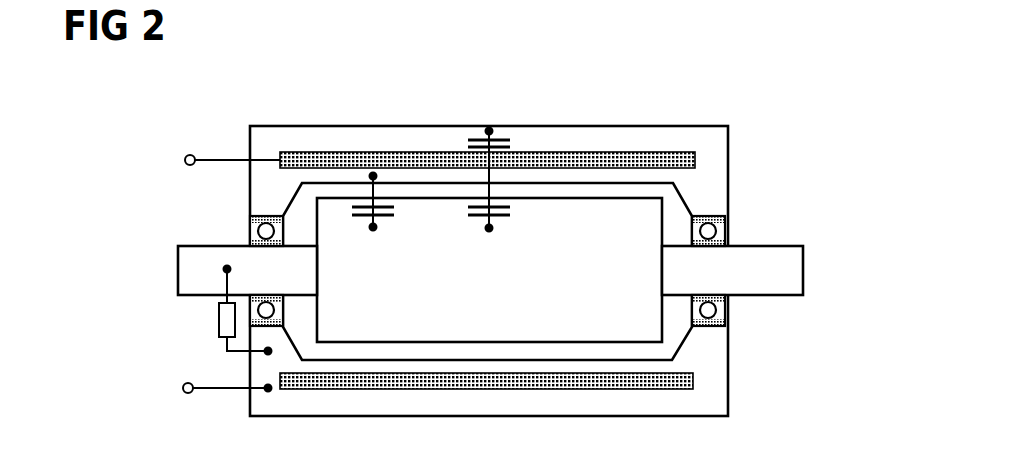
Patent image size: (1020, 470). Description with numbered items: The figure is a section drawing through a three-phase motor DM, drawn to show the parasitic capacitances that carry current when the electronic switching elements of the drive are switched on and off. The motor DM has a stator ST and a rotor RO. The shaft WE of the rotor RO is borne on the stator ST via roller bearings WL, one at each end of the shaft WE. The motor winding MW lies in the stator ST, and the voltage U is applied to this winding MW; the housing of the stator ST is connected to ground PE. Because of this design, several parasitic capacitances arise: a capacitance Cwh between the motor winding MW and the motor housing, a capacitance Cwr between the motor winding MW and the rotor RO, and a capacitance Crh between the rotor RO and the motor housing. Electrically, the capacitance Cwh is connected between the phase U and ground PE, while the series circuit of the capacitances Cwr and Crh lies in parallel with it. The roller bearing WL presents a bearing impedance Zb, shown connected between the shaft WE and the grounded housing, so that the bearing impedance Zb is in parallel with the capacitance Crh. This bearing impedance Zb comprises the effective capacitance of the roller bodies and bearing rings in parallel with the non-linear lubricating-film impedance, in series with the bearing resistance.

The stator ST is at (633, 126).
The three-phase motor DM is at (762, 168).
The motor winding MW is at (341, 152).
The rotor RO is at (630, 318).
The shaft WE is at (800, 276).
The roller bearings WL is at (250, 230).
The capacitance between motor winding and motor housing Cwh is at (489, 131).
The capacitance between motor winding and rotor Cwr is at (489, 233).
The capacitance between rotor and motor housing Crh is at (373, 232).
The voltage U is at (221, 158).
The ground PE is at (209, 388).
The bearing impedance Zb is at (219, 325).